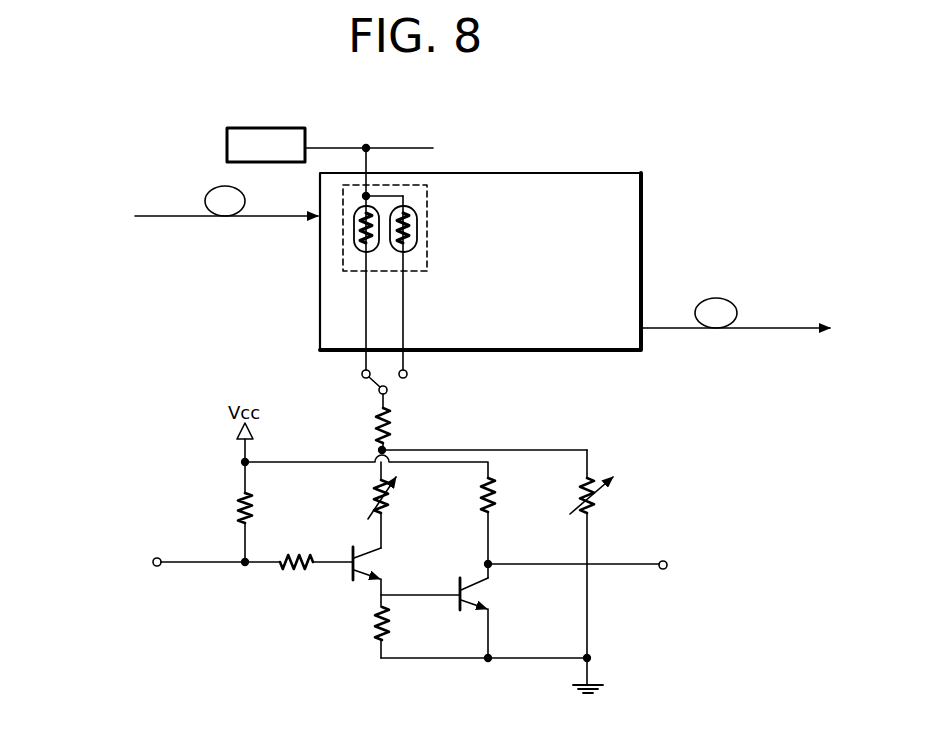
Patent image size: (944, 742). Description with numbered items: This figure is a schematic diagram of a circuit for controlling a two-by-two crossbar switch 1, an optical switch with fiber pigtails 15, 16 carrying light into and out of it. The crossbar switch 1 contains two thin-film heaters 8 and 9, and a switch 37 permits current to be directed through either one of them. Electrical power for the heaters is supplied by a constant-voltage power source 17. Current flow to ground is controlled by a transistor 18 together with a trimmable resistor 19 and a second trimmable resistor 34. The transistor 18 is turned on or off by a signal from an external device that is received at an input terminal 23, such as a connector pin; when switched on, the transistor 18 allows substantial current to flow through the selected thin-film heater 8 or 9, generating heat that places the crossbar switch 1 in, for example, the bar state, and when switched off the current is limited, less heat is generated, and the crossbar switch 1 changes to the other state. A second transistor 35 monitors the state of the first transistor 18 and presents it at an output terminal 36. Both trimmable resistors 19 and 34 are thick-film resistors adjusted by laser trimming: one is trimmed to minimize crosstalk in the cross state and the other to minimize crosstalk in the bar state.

The 2×2 crossbar switch 1 is at (427, 252).
The thin-film heater 8 is at (352, 248).
The thin-film heater 9 is at (418, 213).
The fiber pigtail 15 is at (160, 215).
The fiber pigtail 16 is at (783, 327).
The constant-voltage power source 17 is at (290, 127).
The transistor 18 is at (355, 578).
The trimmable resistor 19 is at (612, 496).
The input terminal 23 is at (153, 559).
The second trimmable resistor 34 is at (372, 496).
The second transistor 35 is at (488, 600).
The output terminal 36 is at (667, 562).
The switch 37 is at (396, 388).